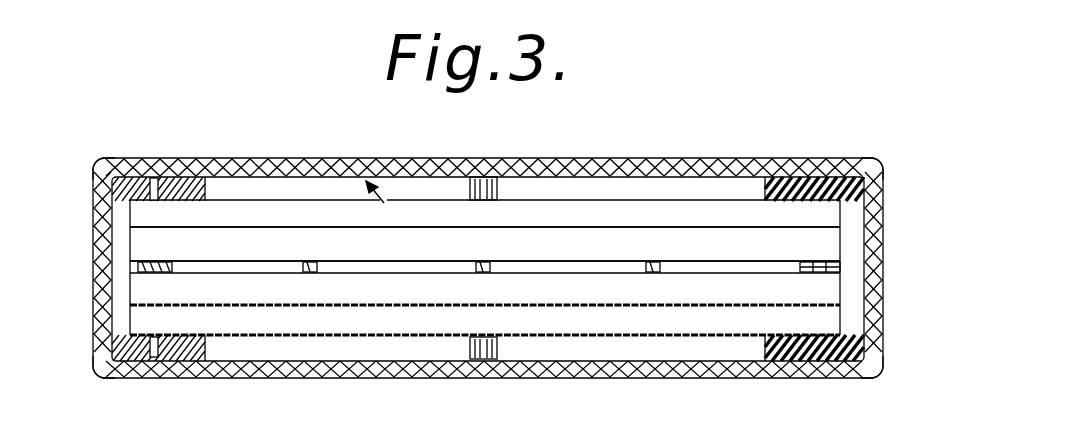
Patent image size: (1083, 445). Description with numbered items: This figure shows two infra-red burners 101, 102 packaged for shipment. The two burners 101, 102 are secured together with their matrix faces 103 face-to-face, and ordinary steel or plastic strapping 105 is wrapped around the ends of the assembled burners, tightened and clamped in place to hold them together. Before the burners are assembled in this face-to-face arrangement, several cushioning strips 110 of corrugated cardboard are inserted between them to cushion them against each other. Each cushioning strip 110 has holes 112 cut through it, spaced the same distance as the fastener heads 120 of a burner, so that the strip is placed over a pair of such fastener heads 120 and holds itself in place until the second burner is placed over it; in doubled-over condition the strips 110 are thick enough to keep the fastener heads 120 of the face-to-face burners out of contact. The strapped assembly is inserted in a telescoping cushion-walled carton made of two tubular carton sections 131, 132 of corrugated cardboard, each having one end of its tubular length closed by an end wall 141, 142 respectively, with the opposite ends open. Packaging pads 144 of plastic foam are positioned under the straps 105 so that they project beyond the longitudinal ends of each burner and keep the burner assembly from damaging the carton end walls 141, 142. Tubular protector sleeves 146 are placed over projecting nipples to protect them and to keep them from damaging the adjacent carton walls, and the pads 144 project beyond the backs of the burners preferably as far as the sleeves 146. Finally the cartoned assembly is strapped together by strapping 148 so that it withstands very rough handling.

The burner 101 is at (298, 352).
The burner 102 is at (404, 160).
The matrix face 103 is at (340, 282).
The strapping 105 is at (161, 170).
The cushioning strip 110 is at (173, 266).
The hole 112 is at (140, 275).
The fastener head 120 is at (150, 253).
The tubular carton section 131 is at (170, 375).
The tubular carton section 132 is at (350, 377).
The end wall 141 is at (93, 338).
The end wall 142 is at (877, 302).
The packaging pad 144 is at (101, 175).
The protector sleeve 146 is at (498, 188).
The strapping 148 is at (880, 254).